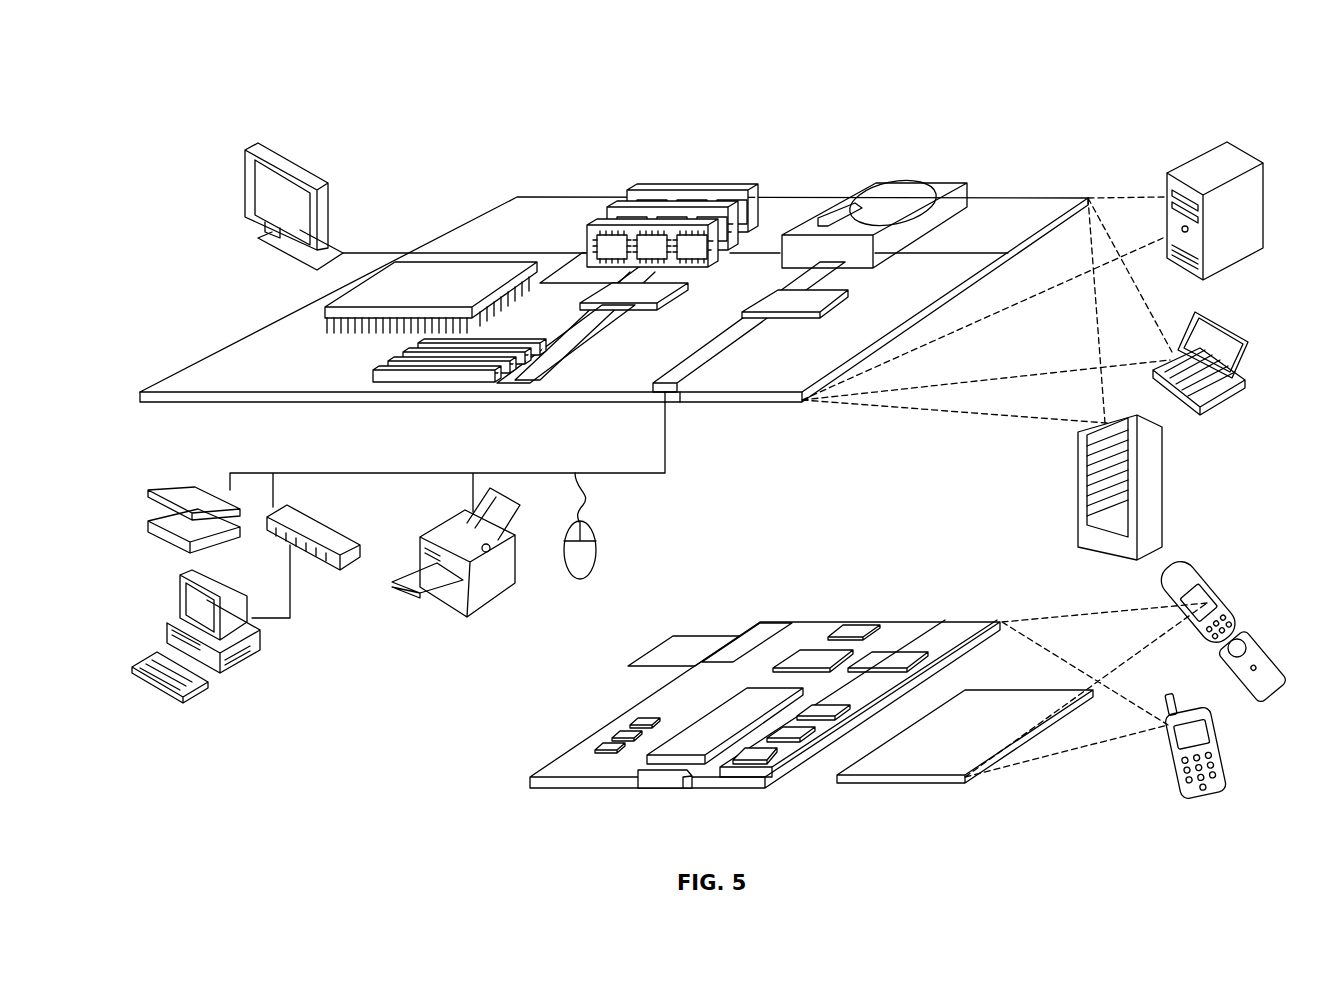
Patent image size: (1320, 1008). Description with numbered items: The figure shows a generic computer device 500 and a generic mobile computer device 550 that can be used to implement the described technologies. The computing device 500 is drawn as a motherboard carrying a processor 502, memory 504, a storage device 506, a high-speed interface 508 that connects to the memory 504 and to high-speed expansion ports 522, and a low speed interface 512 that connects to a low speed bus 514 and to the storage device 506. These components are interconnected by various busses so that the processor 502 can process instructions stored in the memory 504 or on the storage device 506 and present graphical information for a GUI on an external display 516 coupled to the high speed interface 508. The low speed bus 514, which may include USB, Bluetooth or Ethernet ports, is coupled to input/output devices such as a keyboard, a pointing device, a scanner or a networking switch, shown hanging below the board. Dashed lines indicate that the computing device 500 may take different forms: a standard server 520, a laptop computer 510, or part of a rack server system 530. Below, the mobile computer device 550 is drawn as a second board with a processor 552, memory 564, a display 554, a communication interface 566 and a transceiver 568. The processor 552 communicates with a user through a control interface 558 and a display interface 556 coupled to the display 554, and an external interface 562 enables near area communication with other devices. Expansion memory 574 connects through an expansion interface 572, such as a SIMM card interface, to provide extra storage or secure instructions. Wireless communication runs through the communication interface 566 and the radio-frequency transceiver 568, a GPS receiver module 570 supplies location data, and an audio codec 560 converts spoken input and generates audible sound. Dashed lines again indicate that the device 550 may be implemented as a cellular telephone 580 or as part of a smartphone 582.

The computing device 500 is at (205, 90).
The processor 502 is at (333, 313).
The memory 504 is at (665, 195).
The storage device 506 is at (868, 187).
The high-speed interface 508 is at (635, 293).
The laptop computer 510 is at (1232, 332).
The low speed interface 512 is at (777, 300).
The low speed bus 514 is at (681, 402).
The display 516 is at (247, 151).
The standard server 520 is at (1165, 186).
The high-speed expansion ports 522 is at (388, 367).
The rack server system 530 is at (1078, 488).
The mobile computer device 550 is at (508, 824).
The processor 552 is at (697, 734).
The display 554 is at (913, 762).
The display interface 556 is at (736, 762).
The control interface 558 is at (787, 732).
The audio codec 560 is at (820, 704).
The external interface 562 is at (663, 780).
The memory 564 is at (620, 734).
The communication interface 566 is at (813, 655).
The transceiver 568 is at (888, 657).
The GPS receiver module 570 is at (857, 632).
The expansion interface 572 is at (742, 641).
The expansion memory 574 is at (654, 657).
The cellular telephone 580 is at (1232, 578).
The smartphone 582 is at (1222, 760).